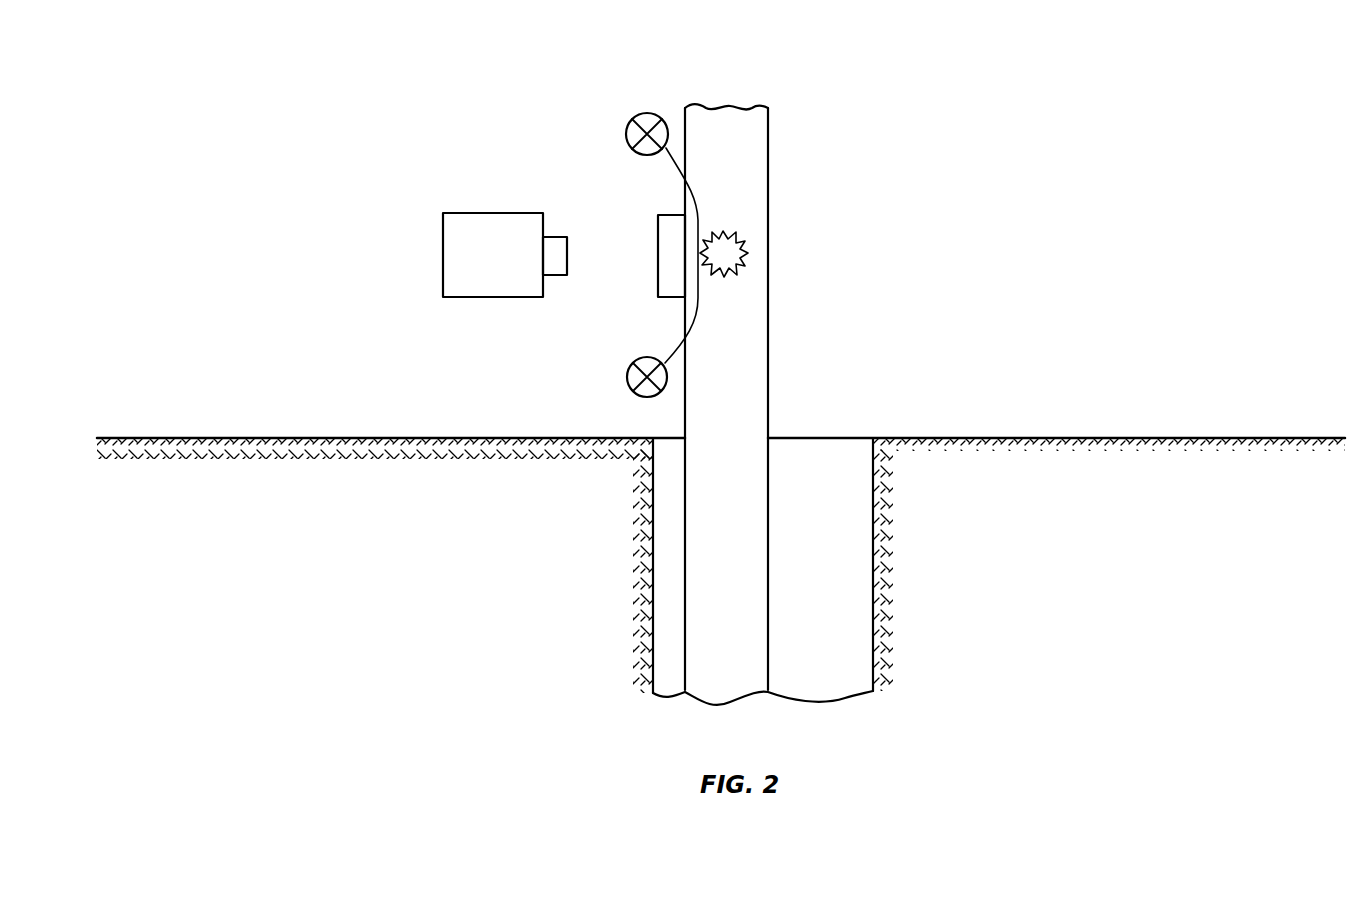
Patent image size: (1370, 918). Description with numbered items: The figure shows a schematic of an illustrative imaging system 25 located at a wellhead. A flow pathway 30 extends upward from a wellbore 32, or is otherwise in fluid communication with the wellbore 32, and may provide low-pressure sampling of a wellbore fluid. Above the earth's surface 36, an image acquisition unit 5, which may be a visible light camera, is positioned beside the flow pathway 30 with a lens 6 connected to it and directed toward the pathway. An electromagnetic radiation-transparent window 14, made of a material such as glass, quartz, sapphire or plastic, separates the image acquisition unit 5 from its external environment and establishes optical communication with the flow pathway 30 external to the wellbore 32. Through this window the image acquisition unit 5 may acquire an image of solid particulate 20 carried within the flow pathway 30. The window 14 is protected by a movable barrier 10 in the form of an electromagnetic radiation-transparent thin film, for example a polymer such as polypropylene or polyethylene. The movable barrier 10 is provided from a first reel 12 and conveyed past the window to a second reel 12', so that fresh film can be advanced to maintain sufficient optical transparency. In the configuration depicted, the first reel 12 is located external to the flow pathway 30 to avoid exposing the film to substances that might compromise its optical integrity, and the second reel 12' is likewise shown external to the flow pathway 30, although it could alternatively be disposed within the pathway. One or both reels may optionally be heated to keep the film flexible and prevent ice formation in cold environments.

The imaging system 25 is at (285, 132).
The image acquisition unit 5 is at (443, 236).
The lens 6 is at (560, 237).
The first reel 12 is at (582, 377).
The second reel 12' is at (618, 101).
The electromagnetic radiation-transparent window 14 is at (661, 214).
The movable barrier 10 is at (699, 234).
The solid particulate 20 is at (741, 263).
The flow pathway 30 is at (768, 333).
The wellbore 32 is at (885, 620).
The earth's surface 36 is at (1137, 437).